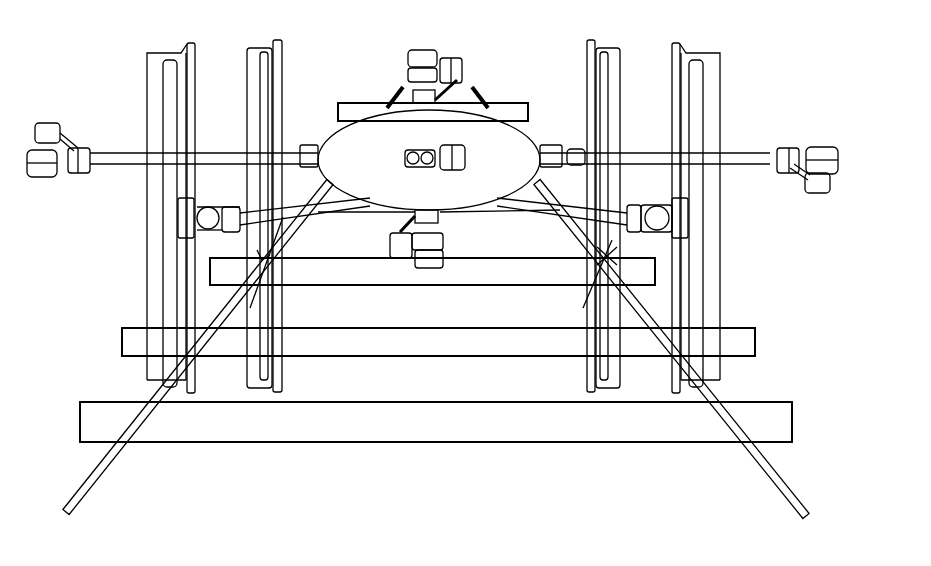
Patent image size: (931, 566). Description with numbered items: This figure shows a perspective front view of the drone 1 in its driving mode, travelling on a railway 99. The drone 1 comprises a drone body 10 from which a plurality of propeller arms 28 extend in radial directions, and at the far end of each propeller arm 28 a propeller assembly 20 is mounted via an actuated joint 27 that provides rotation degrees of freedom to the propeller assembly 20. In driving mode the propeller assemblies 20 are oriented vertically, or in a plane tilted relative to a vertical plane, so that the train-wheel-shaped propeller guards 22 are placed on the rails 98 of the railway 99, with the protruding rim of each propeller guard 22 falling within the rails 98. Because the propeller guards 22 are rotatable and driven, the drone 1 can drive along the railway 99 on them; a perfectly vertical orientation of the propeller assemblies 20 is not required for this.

The drone 1 is at (113, 95).
The drone body 10 is at (371, 168).
The propeller assembly 20 is at (710, 272).
The propeller guard 22 is at (277, 262).
The actuated joint 27 is at (210, 218).
The propeller arm 28 is at (527, 202).
The rail 98 is at (97, 483).
The railway track 99 is at (744, 452).